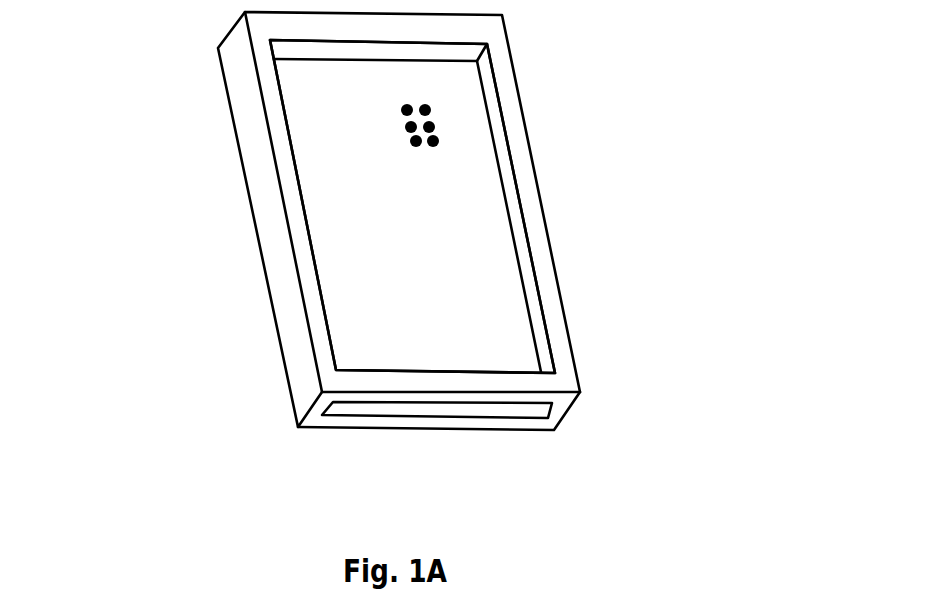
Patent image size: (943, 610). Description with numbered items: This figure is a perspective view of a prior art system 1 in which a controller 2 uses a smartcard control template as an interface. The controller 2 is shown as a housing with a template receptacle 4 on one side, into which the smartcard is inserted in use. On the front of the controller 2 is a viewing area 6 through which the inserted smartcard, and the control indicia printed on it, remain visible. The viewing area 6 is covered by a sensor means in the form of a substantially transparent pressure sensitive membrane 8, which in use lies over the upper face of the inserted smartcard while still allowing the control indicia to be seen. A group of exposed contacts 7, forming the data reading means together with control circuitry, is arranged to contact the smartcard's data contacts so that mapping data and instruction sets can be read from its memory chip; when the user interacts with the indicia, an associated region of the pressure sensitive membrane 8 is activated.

The prior art system 1 is at (117, 147).
The controller 2 is at (513, 108).
The template receptacle 4 is at (502, 412).
The viewing area 6 is at (412, 206).
The exposed contacts 7 is at (433, 140).
The pressure sensitive membrane 8 is at (427, 292).